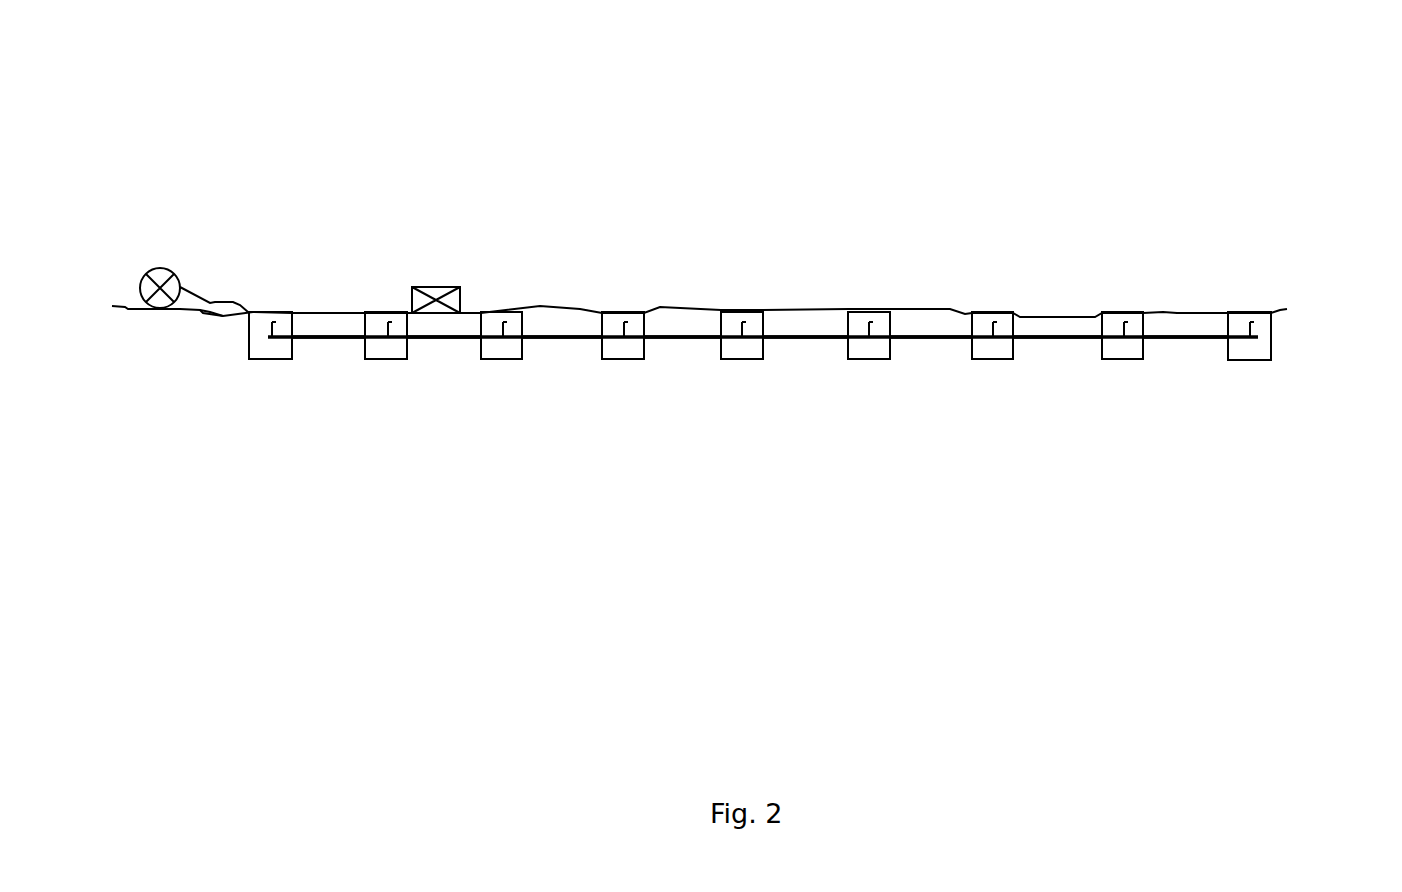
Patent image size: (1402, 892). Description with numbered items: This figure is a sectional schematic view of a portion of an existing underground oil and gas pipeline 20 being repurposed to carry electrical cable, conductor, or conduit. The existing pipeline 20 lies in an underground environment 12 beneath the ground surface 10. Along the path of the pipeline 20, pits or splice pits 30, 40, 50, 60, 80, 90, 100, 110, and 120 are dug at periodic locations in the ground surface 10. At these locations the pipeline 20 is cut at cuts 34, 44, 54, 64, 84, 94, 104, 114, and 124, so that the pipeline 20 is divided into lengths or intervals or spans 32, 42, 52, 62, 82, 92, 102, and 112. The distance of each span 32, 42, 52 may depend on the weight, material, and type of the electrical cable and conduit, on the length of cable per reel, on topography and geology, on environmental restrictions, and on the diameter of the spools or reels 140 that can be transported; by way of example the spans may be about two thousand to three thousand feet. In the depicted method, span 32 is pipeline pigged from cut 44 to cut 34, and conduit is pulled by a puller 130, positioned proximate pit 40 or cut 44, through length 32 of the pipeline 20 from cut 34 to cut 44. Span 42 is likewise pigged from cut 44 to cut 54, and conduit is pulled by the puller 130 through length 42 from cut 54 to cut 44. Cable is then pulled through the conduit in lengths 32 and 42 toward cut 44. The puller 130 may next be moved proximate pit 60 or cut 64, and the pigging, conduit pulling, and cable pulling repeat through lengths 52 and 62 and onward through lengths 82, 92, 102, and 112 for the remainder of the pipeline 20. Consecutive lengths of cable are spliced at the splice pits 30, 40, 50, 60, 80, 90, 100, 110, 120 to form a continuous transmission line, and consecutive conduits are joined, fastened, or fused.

The ground surface 10 is at (1045, 313).
The underground environment 12 is at (698, 401).
The existing pipeline 20 is at (497, 520).
The pit or splice pit 30 is at (272, 313).
The pipeline interval, length, or span 32 is at (316, 340).
The cut 34 is at (273, 322).
The pit or splice pit 40 is at (385, 313).
The pipeline interval, length, or span 42 is at (422, 340).
The cut 44 is at (388, 322).
The pit or splice pit 50 is at (500, 313).
The pipeline interval, length, or span 52 is at (560, 340).
The cut 54 is at (503, 322).
The pit or splice pit 60 is at (618, 313).
The pipeline interval, length, or span 62 is at (698, 340).
The cut 64 is at (624, 322).
The pit or splice pit 80 is at (735, 313).
The pipeline interval, length, or span 82 is at (800, 340).
The cut 84 is at (742, 322).
The pit or splice pit 90 is at (862, 313).
The pipeline interval, length, or span 92 is at (930, 340).
The cut 94 is at (869, 322).
The pit or splice pit 100 is at (990, 313).
The pipeline interval, length, or span 102 is at (1053, 340).
The cut 104 is at (993, 322).
The pit or splice pit 110 is at (1135, 313).
The pipeline interval, length, or span 112 is at (1183, 340).
The cut 114 is at (1124, 322).
The pit or splice pit 120 is at (1251, 313).
The cut 124 is at (1250, 322).
The puller 130 is at (430, 287).
The spool or reel 140 is at (155, 268).